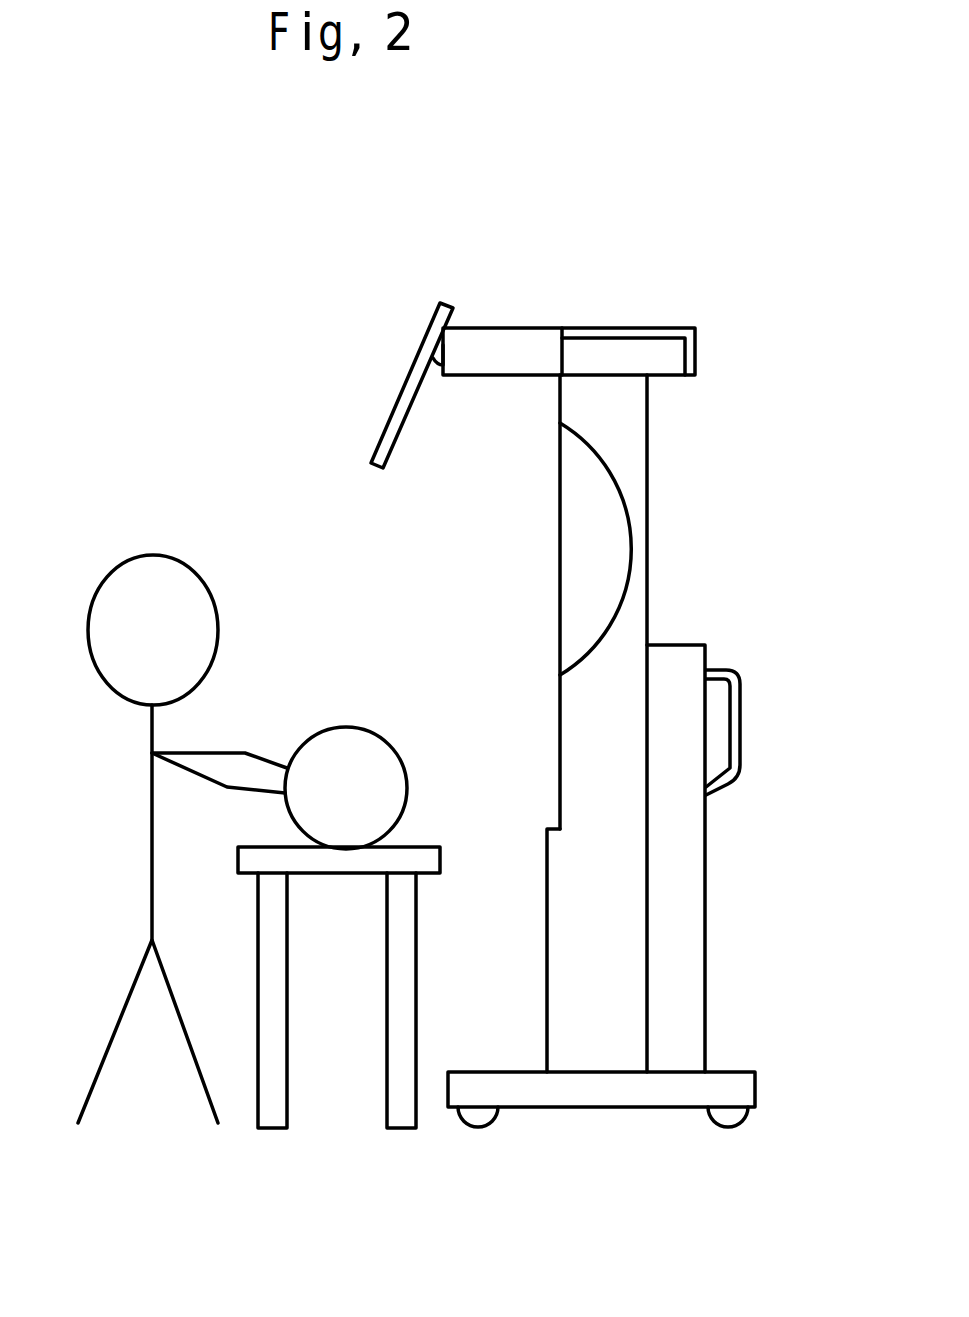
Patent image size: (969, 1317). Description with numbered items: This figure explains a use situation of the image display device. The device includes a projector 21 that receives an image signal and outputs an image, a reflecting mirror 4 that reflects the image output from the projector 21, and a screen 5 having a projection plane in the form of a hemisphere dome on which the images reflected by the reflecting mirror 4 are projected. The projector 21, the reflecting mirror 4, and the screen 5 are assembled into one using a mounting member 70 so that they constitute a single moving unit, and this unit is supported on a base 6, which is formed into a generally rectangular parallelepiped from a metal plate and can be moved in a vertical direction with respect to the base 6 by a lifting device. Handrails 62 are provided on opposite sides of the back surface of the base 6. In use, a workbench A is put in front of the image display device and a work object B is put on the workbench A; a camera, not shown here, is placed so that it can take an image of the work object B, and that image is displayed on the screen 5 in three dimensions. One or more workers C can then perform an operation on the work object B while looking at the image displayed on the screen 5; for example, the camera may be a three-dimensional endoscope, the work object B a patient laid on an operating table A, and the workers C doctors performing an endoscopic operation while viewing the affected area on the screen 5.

The projector 21 is at (628, 352).
The reflecting mirror 4 is at (405, 400).
The screen 5 is at (622, 517).
The mounting member 70 is at (615, 655).
The handrail 62 is at (737, 715).
The base 6 is at (675, 932).
The workbench A is at (422, 848).
The work object B is at (362, 728).
The worker C is at (137, 553).